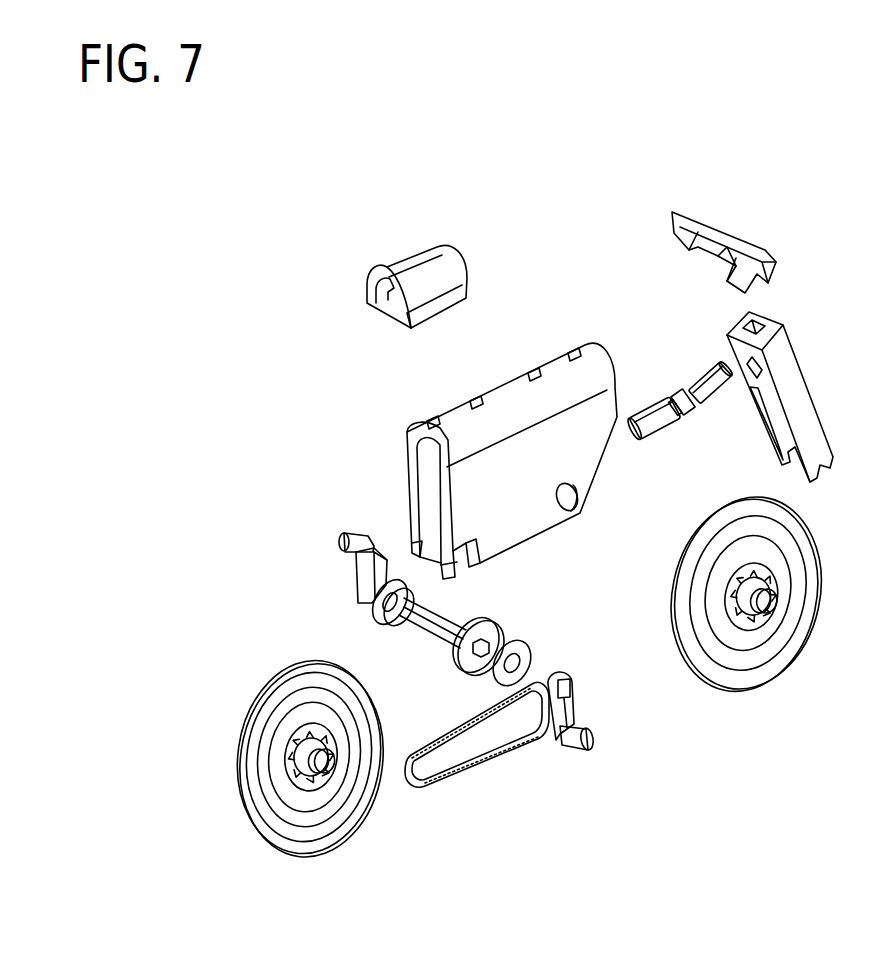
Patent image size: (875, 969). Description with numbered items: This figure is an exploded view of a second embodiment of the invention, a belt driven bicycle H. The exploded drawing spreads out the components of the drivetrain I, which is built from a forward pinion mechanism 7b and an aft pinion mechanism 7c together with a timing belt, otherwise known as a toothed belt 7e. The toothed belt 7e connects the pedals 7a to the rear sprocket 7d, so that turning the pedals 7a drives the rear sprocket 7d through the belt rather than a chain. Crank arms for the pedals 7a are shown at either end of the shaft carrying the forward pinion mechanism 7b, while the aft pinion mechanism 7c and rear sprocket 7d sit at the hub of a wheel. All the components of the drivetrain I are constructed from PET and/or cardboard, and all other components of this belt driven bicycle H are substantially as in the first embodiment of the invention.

The bicycle H is at (282, 318).
The drivetrain I is at (318, 587).
The pedals 7a is at (355, 531).
The forward pinion mechanism 7b is at (503, 625).
The aft pinion mechanism 7c is at (307, 782).
The rear sprocket 7d is at (307, 733).
The toothed belt 7e is at (487, 760).